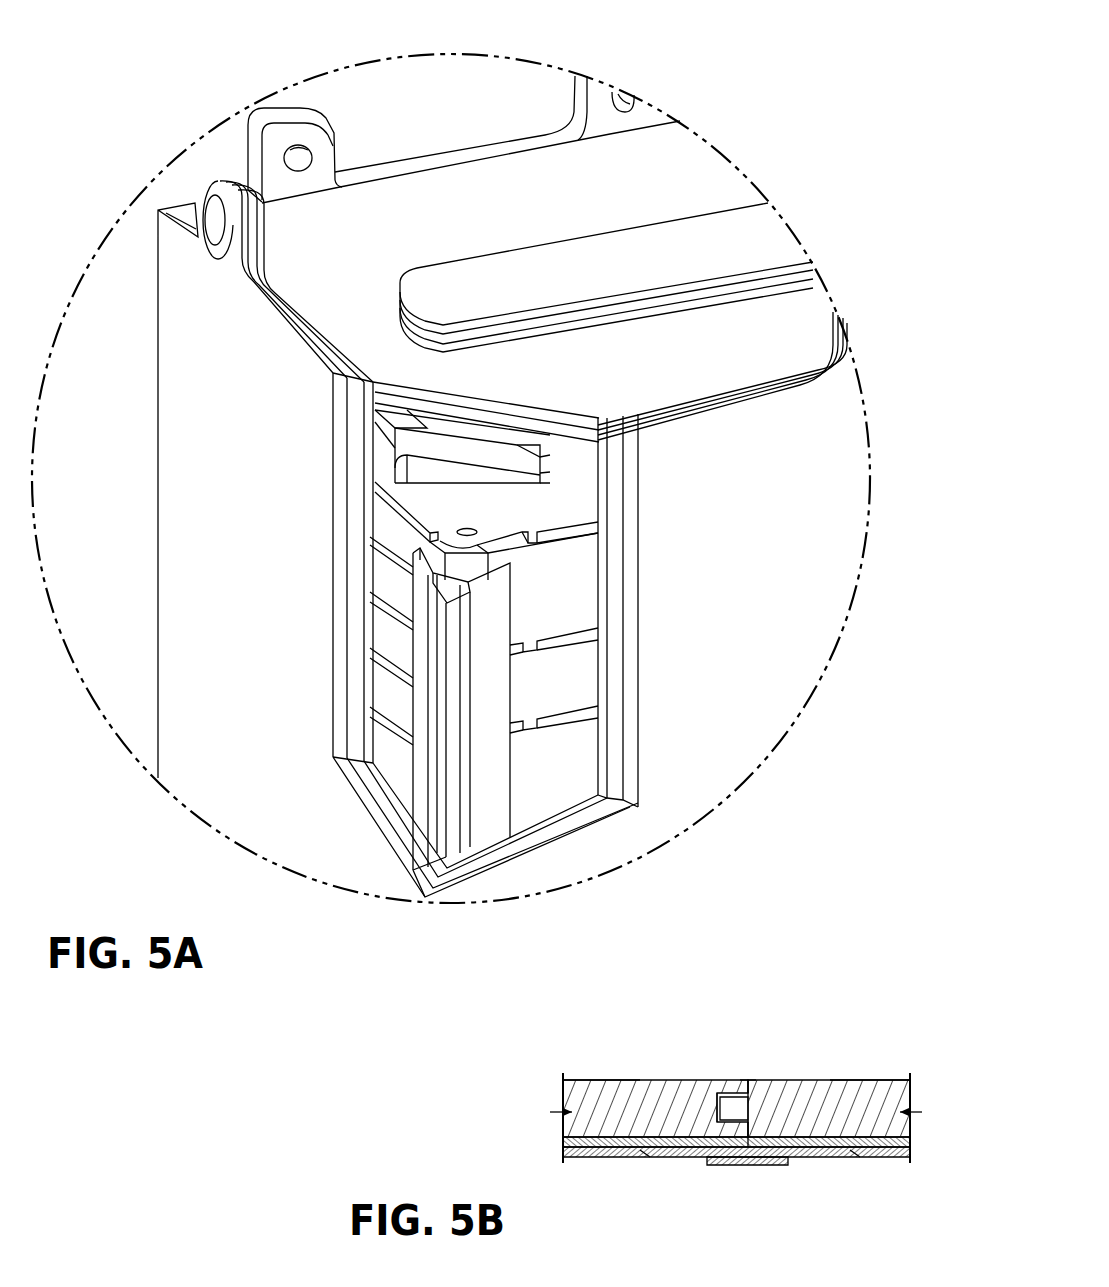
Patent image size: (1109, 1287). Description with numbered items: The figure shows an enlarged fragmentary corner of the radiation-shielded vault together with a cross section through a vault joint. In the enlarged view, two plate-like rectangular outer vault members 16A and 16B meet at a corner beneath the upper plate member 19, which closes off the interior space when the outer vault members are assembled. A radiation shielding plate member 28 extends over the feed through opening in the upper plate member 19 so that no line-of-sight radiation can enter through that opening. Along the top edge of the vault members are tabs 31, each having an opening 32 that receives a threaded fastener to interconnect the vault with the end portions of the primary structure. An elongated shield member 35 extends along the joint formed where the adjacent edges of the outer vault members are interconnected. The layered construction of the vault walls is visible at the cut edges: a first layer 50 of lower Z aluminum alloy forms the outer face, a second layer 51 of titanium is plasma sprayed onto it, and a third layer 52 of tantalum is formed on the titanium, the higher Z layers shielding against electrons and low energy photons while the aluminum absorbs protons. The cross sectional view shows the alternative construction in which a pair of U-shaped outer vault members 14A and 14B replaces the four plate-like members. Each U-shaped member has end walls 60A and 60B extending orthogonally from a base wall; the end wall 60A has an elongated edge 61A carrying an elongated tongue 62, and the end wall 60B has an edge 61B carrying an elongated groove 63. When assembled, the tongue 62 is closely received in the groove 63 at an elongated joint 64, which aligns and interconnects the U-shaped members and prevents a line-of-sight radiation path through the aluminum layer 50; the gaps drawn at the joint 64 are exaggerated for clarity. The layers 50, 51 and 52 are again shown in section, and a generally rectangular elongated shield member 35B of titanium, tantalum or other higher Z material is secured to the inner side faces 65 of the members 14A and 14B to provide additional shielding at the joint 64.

In FIG. 5A, the outer vault member 16A is at (185, 362).
In FIG. 5A, the outer vault member 16B is at (770, 460).
In FIG. 5A, the upper plate member 19 is at (665, 170).
In FIG. 5A, the radiation shielding plate member 28 is at (705, 247).
In FIG. 5A, the tab 31 is at (288, 115).
In FIG. 5A, the opening 32 is at (312, 143).
In FIG. 5A, the elongated shield member 35 is at (437, 727).
In FIG. 5A, the first layer 50 is at (378, 817).
In FIG. 5B, the first layer 50 is at (585, 1100).
In FIG. 5A, the second layer 51 is at (400, 828).
In FIG. 5B, the second layer 51 is at (567, 1140).
In FIG. 5A, the third layer 52 is at (412, 840).
In FIG. 5B, the third layer 52 is at (587, 1157).
In FIG. 5B, the U-shaped outer vault member 14A is at (582, 1070).
In FIG. 5B, the U-shaped outer vault member 14B is at (883, 1070).
In FIG. 5B, the elongated shield member 35B is at (757, 1165).
In FIG. 5B, the end wall 60A is at (853, 1080).
In FIG. 5B, the end wall 60B is at (617, 1078).
In FIG. 5B, the elongated edge 61A is at (753, 1080).
In FIG. 5B, the edge 61B is at (747, 1087).
In FIG. 5B, the elongated tongue 62 is at (745, 1108).
In FIG. 5B, the elongated groove 63 is at (700, 1087).
In FIG. 5B, the joint 64 is at (749, 1065).
In FIG. 5B, the inner side face 65 is at (645, 1158).